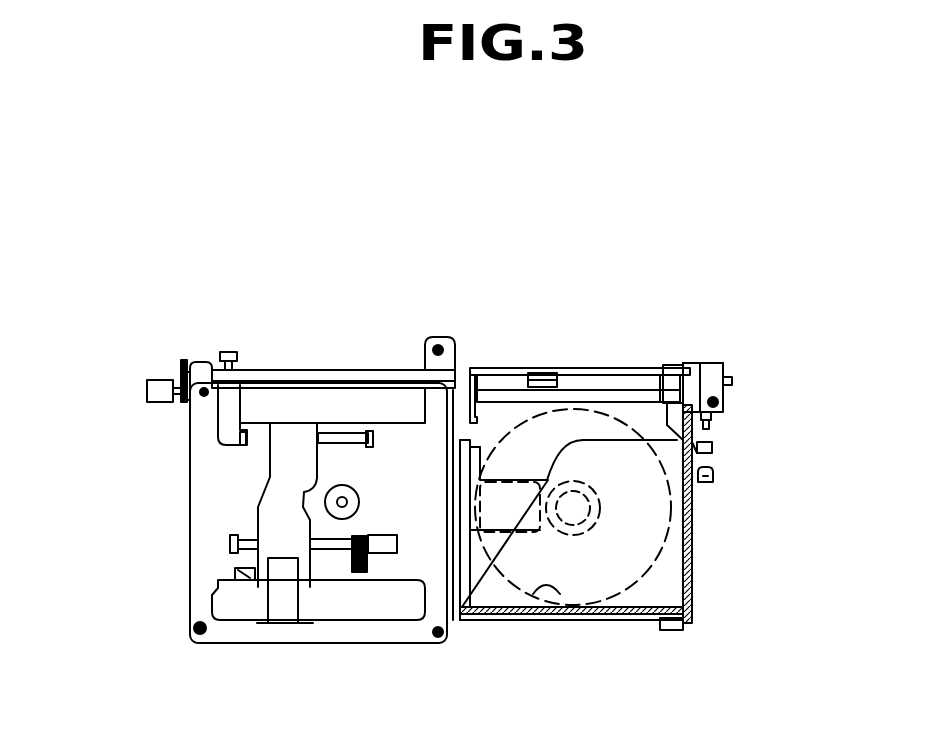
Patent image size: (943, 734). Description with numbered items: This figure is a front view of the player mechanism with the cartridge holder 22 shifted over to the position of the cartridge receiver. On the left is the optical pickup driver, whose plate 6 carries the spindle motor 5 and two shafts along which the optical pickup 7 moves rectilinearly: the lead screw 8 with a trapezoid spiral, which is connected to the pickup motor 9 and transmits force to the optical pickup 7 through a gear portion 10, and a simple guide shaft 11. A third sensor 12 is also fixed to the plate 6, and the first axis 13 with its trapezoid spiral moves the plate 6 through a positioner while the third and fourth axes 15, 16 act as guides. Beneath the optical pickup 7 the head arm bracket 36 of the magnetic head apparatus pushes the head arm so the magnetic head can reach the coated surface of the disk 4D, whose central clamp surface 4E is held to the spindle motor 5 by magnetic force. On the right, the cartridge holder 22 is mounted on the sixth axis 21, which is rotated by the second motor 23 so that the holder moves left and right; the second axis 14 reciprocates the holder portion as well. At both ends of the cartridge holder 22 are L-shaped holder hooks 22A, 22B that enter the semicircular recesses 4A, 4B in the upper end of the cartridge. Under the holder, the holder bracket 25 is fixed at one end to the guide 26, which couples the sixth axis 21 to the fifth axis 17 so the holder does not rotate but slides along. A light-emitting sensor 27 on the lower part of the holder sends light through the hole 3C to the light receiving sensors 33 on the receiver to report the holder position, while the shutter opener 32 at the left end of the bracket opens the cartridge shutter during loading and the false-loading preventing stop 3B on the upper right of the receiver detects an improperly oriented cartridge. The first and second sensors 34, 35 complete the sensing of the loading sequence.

The false-loading preventing stop 3B is at (695, 525).
The hole 3C is at (712, 447).
The semicircular recess 4A is at (490, 412).
The semicircular recess 4B is at (661, 380).
The disk 4D is at (560, 598).
The central clamp surface 4E is at (597, 522).
The spindle motor 5 is at (362, 495).
The plate 6 is at (195, 515).
The optical pickup 7 is at (265, 490).
The lead screw 8 is at (332, 549).
The pickup motor 9 is at (387, 553).
The gear portion 10 is at (368, 565).
The guide shaft 11 is at (341, 432).
The third sensor 12 is at (245, 573).
The first axis 13 is at (195, 630).
The second axis 14 is at (202, 362).
The third axis 15 is at (432, 340).
The fourth axis 16 is at (439, 638).
The fifth axis 17 is at (715, 402).
The sixth axis 21 is at (735, 380).
The cartridge holder 22 is at (577, 368).
The holder hook 22A is at (476, 420).
The holder hook 22B is at (717, 370).
The second motor 23 is at (147, 388).
The holder bracket 25 is at (268, 380).
The guide 26 is at (725, 368).
The light-emitting sensor 27 is at (710, 422).
The shutter opener 32 is at (678, 630).
The light receiving sensor 33 is at (712, 478).
The first sensor 34 is at (232, 352).
The second sensor 35 is at (695, 365).
The head arm bracket 36 is at (285, 605).